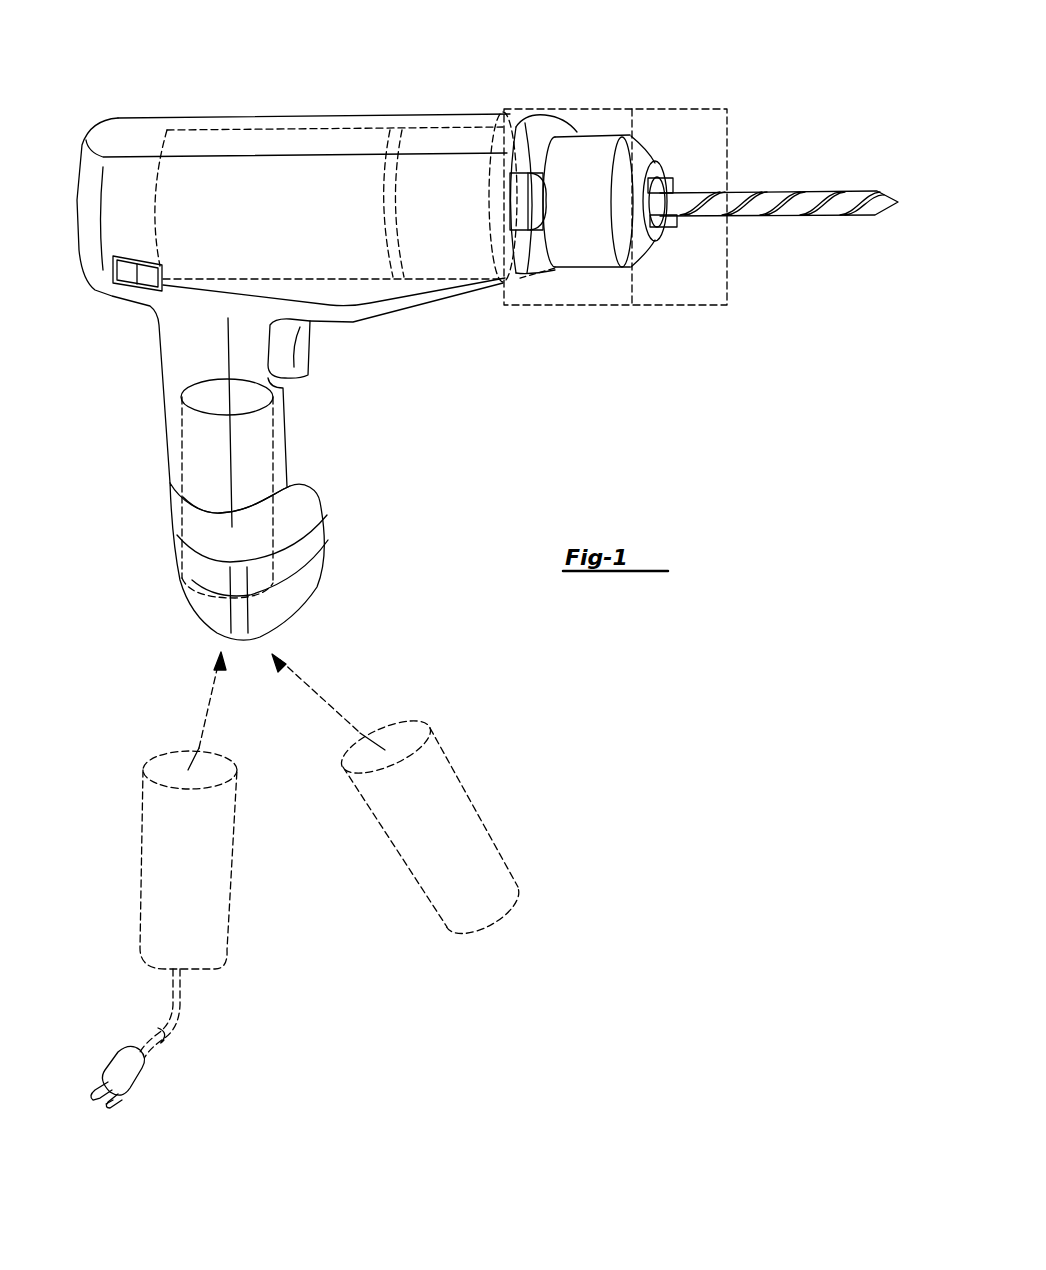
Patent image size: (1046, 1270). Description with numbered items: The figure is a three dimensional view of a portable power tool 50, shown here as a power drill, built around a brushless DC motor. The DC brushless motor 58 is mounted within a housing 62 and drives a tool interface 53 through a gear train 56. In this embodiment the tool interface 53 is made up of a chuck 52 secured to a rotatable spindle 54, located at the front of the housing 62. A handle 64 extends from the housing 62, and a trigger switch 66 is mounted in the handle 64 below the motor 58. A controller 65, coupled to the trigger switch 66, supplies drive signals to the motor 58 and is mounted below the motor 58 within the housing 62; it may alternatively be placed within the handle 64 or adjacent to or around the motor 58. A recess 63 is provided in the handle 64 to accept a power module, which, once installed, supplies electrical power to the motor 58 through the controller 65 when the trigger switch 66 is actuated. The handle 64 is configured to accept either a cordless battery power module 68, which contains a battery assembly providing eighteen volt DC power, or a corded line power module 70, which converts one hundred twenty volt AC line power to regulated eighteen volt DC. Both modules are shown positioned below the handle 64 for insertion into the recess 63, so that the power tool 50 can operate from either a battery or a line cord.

The portable power tool 50 is at (172, 112).
The chuck 52 is at (642, 140).
The tool interface 53 is at (618, 308).
The rotatable spindle 54 is at (540, 173).
The gear train 56 is at (455, 128).
The DC brushless motor 58 is at (250, 150).
The housing 62 is at (352, 118).
The recess 63 is at (268, 492).
The handle 64 is at (170, 483).
The controller 65 is at (117, 288).
The trigger switch 66 is at (307, 348).
The cordless battery power module 68 is at (445, 752).
The corded line power module 70 is at (230, 895).